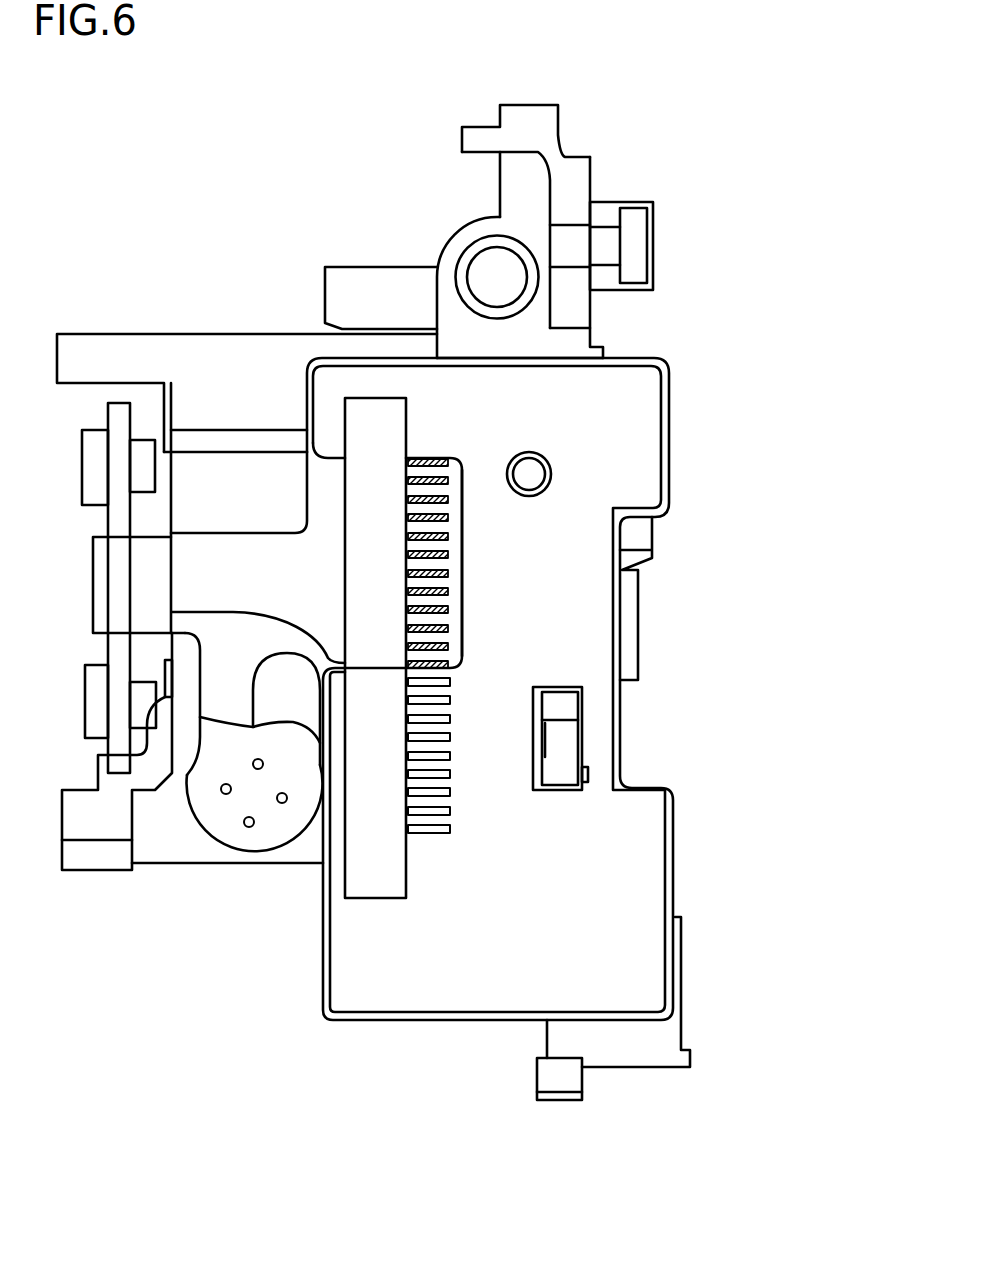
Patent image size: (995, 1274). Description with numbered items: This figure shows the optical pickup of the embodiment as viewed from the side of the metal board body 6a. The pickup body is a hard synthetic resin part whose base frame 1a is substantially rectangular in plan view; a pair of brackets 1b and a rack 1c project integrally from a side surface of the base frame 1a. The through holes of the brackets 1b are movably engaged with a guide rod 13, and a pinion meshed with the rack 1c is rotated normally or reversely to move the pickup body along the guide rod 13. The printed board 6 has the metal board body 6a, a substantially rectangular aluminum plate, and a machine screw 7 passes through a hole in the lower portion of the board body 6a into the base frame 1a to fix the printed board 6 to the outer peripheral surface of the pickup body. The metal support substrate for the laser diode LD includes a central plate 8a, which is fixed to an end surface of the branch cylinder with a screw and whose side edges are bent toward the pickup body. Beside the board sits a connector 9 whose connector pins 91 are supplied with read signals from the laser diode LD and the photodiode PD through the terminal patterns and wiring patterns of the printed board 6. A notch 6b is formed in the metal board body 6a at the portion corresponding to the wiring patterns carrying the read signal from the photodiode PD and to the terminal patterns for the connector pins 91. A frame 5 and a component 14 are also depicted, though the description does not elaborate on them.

The base frame 1a is at (633, 1055).
The brackets 1b is at (572, 343).
The rack 1c is at (558, 120).
The frame 5 is at (222, 550).
The printed board 6 is at (647, 850).
The metal board body 6a is at (677, 902).
The notch 6b is at (477, 602).
The machine screw 7 is at (537, 470).
The central plate 8a is at (173, 847).
The connector 9 is at (375, 900).
The guide rod 13 is at (487, 267).
The connector 14 is at (565, 705).
The connector pins 91 is at (403, 500).
The photodiode PD is at (100, 572).
The laser diode LD is at (253, 847).